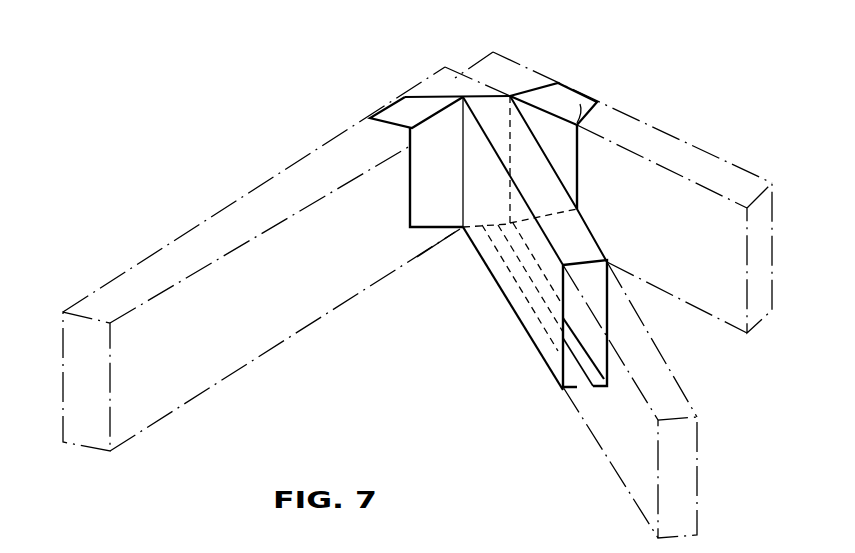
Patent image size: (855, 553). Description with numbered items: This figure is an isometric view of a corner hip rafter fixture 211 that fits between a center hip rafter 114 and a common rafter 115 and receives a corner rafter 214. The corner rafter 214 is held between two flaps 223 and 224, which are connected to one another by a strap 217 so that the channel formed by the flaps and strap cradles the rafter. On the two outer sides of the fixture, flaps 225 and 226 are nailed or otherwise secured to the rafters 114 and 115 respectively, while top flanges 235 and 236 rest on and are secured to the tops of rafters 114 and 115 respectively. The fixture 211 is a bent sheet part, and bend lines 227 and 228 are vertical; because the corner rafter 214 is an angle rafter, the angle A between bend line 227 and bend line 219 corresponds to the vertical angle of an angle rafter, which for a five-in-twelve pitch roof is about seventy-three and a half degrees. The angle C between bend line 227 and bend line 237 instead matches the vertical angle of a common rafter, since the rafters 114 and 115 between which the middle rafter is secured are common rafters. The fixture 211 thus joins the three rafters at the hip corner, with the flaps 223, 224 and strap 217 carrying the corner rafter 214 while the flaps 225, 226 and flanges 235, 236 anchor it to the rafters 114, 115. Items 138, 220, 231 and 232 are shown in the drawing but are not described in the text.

The center hip rafter 114 is at (243, 372).
The common rafter 115 is at (708, 326).
The corner rafter 214 is at (698, 470).
The flap 225 is at (456, 194).
The top flange 235 is at (398, 112).
The top flange 236 is at (566, 90).
The bend line 237 is at (418, 128).
The flap 226 is at (566, 156).
The bend line 227 is at (457, 198).
The bend line 228 is at (487, 112).
The fastener hole 138 is at (568, 114).
The channel member 220 is at (601, 246).
The strap 217 is at (607, 259).
The flap 224 is at (609, 313).
The bend line 219 is at (552, 263).
The corner hip rafter fixture 211 is at (503, 298).
The flap 223 is at (540, 330).
The left bottom lip 231 is at (577, 393).
The right bottom lip 232 is at (593, 388).